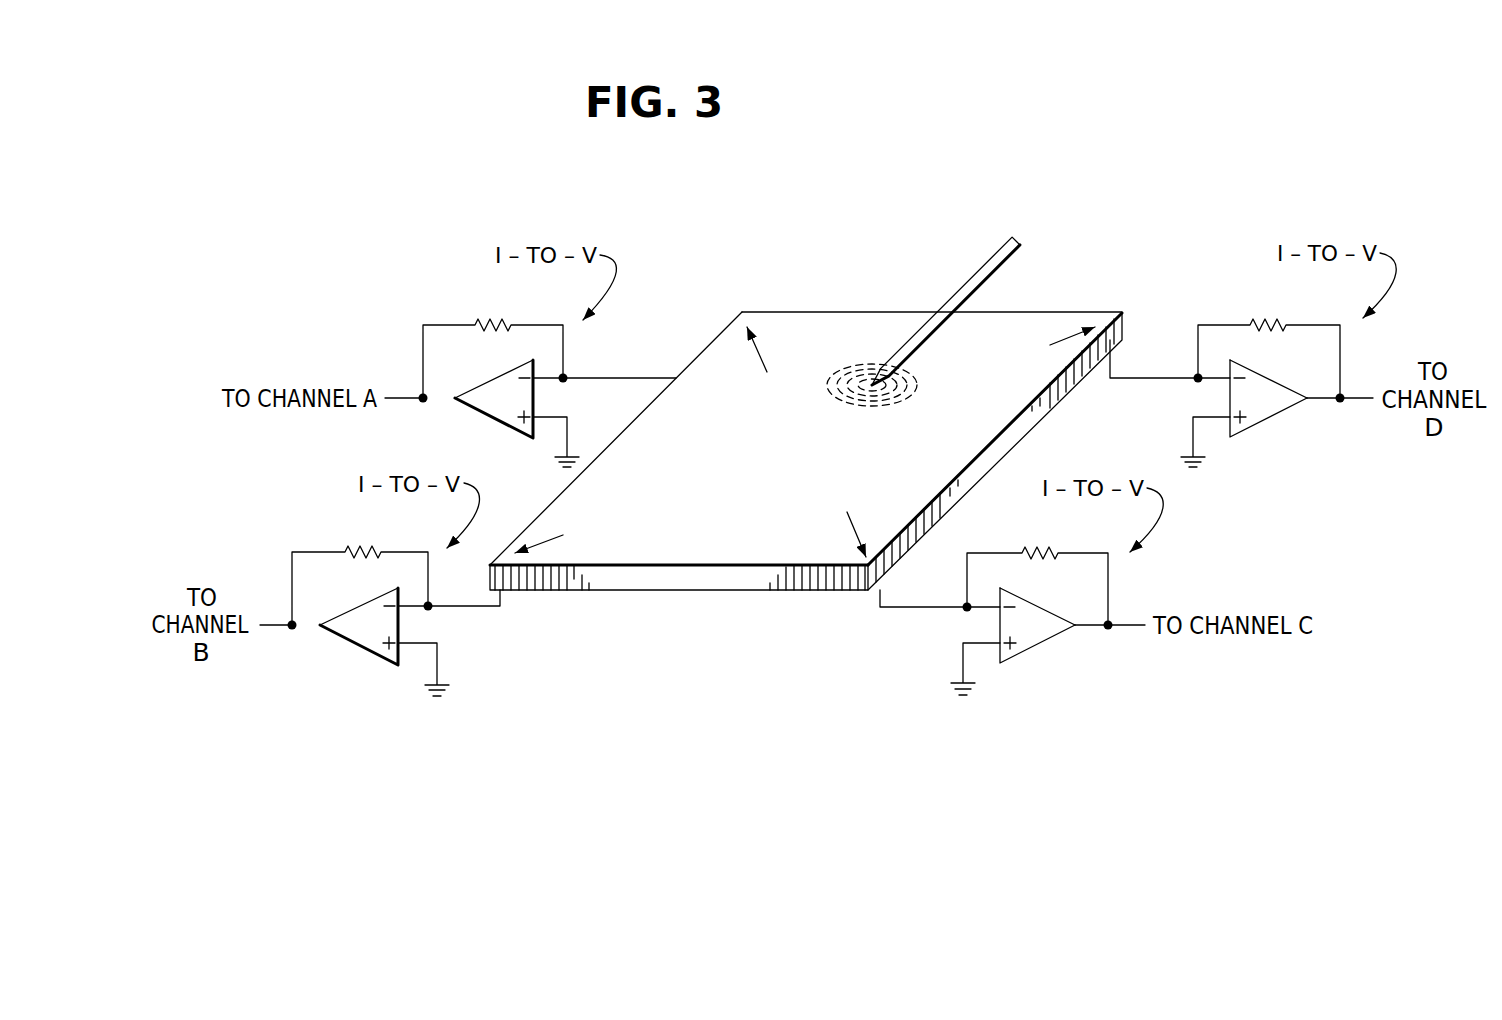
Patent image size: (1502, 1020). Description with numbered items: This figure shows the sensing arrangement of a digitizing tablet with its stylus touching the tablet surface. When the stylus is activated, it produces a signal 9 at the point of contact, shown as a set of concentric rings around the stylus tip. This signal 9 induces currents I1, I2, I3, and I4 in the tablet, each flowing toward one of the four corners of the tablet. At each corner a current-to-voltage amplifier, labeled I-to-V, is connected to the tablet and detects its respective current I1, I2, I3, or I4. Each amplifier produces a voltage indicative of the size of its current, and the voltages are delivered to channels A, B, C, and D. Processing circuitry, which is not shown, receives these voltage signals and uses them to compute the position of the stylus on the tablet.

The current I1 is at (762, 352).
The current I2 is at (553, 537).
The current I3 is at (847, 520).
The current I4 is at (1062, 337).
The signal 9 is at (852, 404).